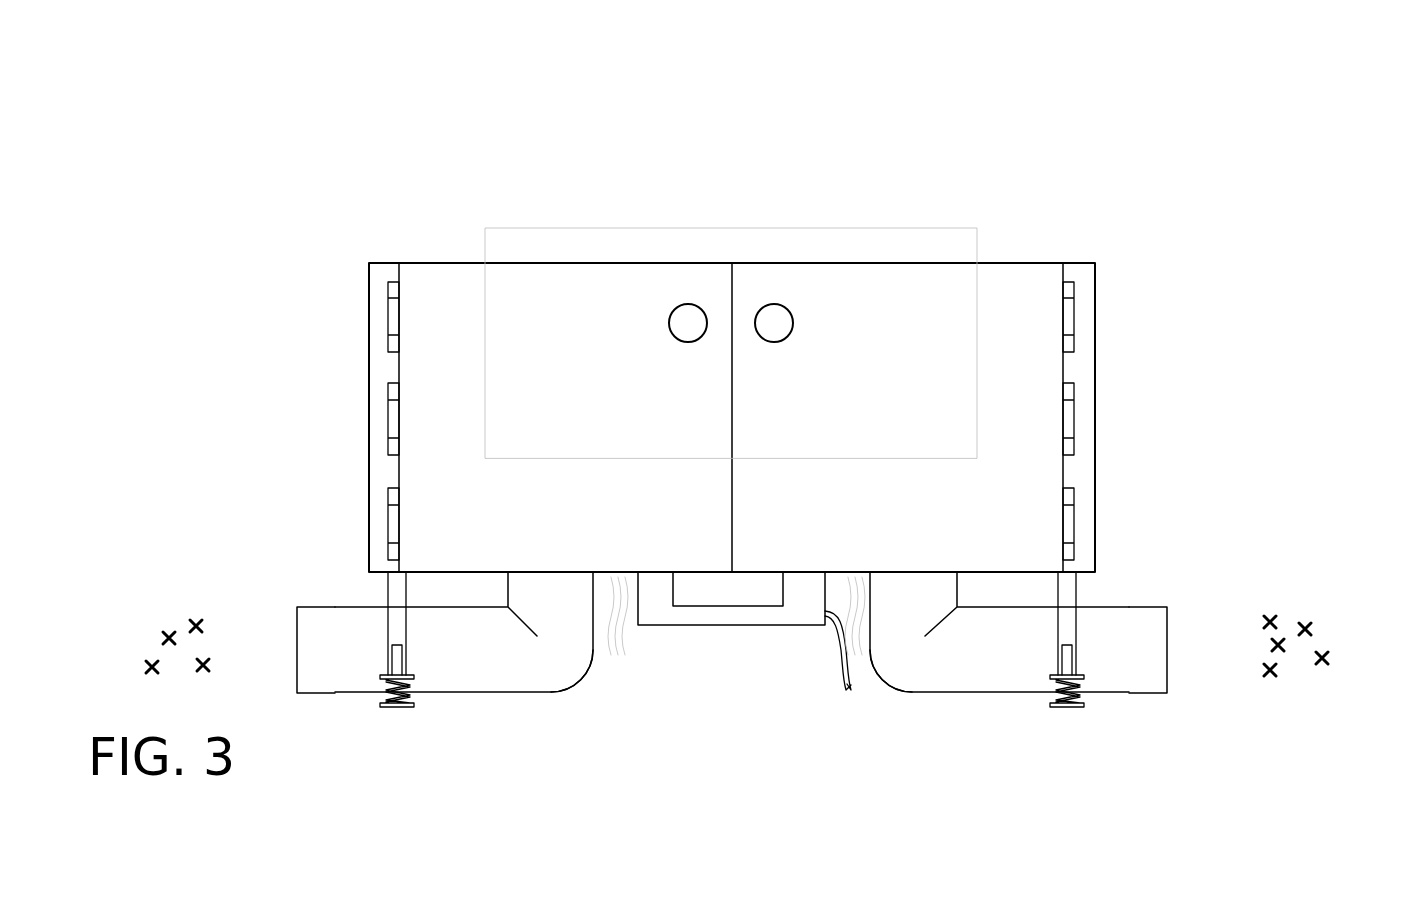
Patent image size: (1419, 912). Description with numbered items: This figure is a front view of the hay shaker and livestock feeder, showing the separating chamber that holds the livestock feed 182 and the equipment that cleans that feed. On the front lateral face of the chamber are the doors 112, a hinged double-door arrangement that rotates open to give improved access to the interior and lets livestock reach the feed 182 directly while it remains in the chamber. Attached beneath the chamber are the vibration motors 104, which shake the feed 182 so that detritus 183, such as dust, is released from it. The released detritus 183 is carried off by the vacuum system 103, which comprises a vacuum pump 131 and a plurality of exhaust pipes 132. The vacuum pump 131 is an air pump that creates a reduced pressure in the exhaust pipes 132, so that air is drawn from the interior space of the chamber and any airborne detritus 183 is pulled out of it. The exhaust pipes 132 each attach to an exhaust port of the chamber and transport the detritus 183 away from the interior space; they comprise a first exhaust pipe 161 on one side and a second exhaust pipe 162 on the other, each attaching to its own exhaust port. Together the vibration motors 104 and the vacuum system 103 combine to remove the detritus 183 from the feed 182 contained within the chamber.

The vacuum system 103 is at (637, 632).
The vibration motors 104 is at (724, 598).
The doors 112 is at (774, 303).
The vacuum pump 131 is at (653, 625).
The exhaust pipes 132 is at (902, 692).
The first exhaust pipe 161 is at (442, 682).
The second exhaust pipe 162 is at (1107, 620).
The feed 182 is at (896, 252).
The detritus 183 is at (172, 623).